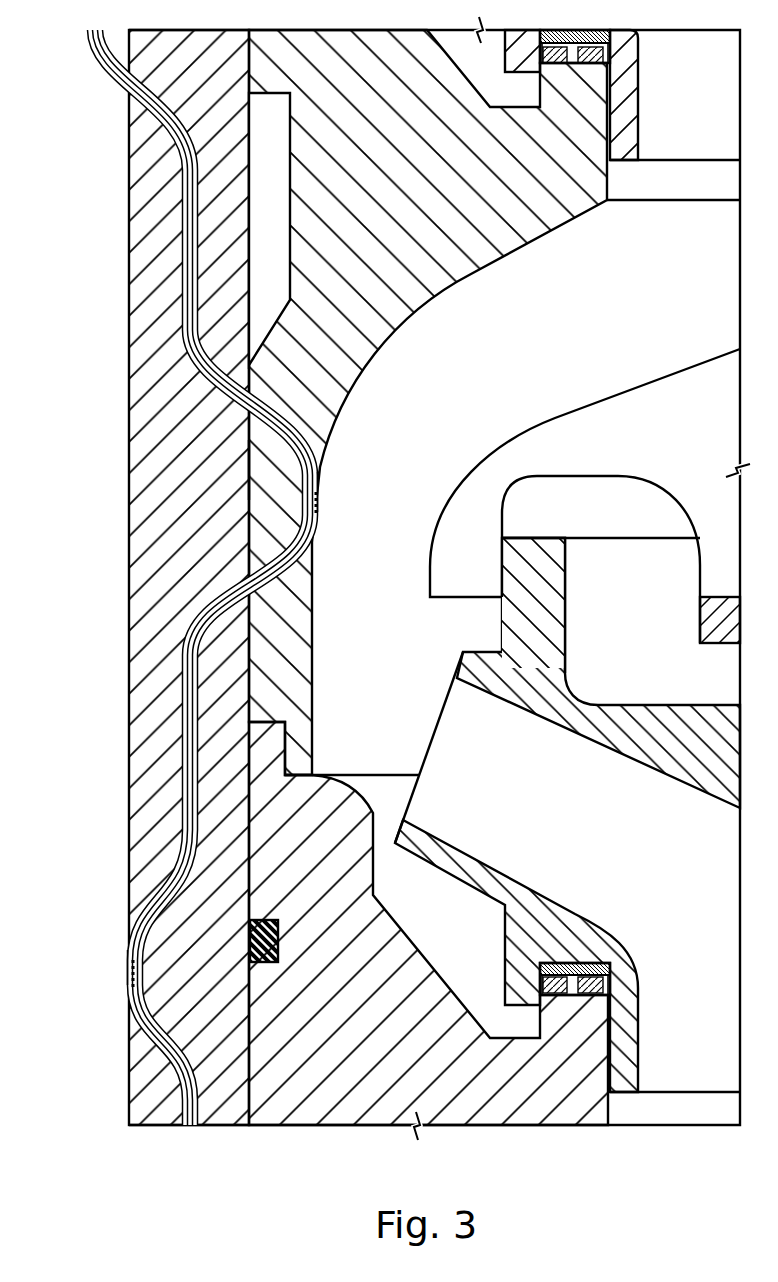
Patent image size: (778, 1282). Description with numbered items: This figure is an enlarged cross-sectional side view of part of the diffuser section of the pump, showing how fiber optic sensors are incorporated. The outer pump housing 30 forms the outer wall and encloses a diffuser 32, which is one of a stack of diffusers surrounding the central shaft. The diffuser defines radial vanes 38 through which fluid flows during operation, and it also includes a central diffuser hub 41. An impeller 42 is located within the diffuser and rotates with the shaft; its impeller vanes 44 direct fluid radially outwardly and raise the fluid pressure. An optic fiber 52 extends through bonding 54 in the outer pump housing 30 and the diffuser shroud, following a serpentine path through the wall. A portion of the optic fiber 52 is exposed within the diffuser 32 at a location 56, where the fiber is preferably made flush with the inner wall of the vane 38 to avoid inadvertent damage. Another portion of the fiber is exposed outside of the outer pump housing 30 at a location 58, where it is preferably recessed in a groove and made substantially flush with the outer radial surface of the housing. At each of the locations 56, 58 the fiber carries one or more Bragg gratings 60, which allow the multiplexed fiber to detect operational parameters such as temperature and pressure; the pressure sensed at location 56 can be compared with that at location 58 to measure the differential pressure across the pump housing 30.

The outer pump housing 30 is at (143, 152).
The diffuser 32 is at (236, 472).
The radial vane 38 is at (477, 270).
The central diffuser hub 41 is at (485, 453).
The impeller 42 is at (490, 622).
The impeller vane 44 is at (505, 702).
The optic fiber 52 is at (183, 217).
The bonding 54 is at (182, 296).
The exposed fiber location within diffuser 56 is at (320, 478).
The exposed fiber location outside housing 58 is at (133, 957).
The Bragg grating 60 is at (319, 505).